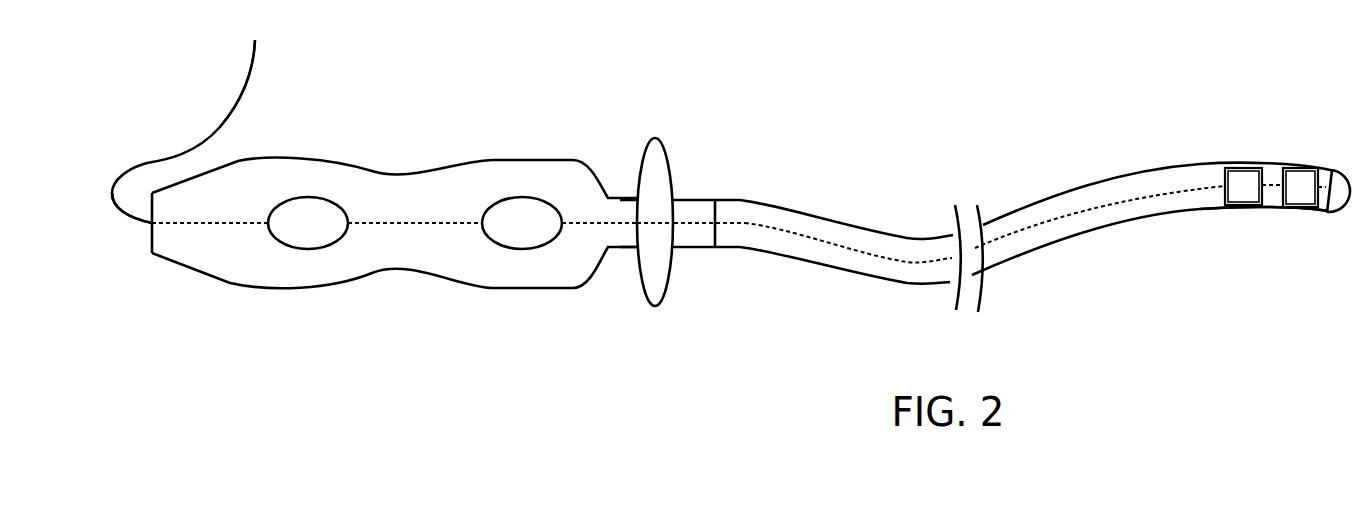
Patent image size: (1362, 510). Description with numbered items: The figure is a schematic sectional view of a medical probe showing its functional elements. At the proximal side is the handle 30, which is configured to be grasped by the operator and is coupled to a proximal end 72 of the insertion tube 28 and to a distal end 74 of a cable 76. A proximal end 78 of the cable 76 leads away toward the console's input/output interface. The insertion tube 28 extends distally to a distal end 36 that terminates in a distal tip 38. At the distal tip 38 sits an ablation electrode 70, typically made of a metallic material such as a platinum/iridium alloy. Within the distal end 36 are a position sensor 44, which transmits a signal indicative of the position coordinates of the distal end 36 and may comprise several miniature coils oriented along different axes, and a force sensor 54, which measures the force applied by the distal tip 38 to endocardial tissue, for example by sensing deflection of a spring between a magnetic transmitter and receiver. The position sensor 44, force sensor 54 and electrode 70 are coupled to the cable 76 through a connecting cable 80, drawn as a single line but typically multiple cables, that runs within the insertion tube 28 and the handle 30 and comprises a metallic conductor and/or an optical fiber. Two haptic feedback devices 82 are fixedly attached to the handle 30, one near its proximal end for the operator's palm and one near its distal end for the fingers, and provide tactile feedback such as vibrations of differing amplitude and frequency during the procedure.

The insertion tube 28 is at (1005, 212).
The handle 30 is at (172, 264).
The distal end 36 is at (1271, 328).
The distal tip 38 is at (1272, 208).
The position sensor 44 is at (1238, 167).
The force sensor 54 is at (1297, 167).
The ablation electrode 70 is at (1337, 213).
The proximal end of insertion tube 72 is at (834, 222).
The distal end of cable 74 is at (118, 217).
The cable 76 is at (145, 153).
The proximal end of cable 78 is at (245, 88).
The connecting cable 80 is at (1112, 202).
The haptic feedback device 82 is at (307, 197).